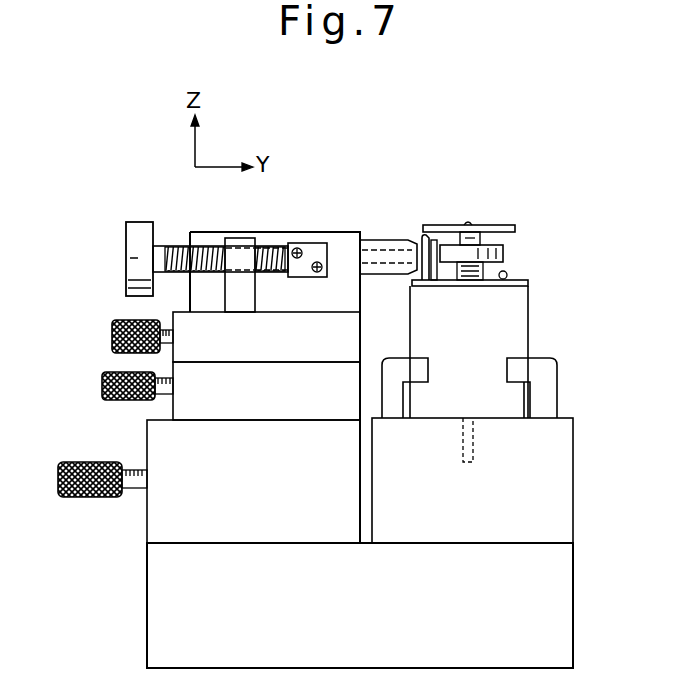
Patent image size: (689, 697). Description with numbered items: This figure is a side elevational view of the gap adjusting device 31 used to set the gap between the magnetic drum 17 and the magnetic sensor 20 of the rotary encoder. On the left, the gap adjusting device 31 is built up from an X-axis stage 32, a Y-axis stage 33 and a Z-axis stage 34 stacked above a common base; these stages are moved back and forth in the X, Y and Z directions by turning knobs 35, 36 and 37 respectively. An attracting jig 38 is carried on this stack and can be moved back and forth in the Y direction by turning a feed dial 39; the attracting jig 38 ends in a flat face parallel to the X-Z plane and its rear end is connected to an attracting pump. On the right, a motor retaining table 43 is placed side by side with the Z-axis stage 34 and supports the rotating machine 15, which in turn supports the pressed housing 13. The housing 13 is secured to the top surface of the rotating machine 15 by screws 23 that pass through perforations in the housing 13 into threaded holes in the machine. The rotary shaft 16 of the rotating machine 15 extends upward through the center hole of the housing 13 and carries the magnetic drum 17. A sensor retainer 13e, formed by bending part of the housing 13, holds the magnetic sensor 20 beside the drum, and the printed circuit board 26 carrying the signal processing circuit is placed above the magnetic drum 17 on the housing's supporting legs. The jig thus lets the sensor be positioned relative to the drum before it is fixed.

The housing 13 is at (529, 283).
The sensor retainer 13e is at (423, 256).
The rotating machine 15 is at (513, 343).
The rotary shaft 16 is at (471, 240).
The magnetic drum 17 is at (504, 253).
The magnetic sensor 20 is at (434, 246).
The screws 23 is at (507, 275).
The printed circuit board 26 is at (515, 228).
The gap adjusting device 31 is at (576, 446).
The X-axis stage 32 is at (180, 405).
The Y-axis stage 33 is at (173, 320).
The Z-axis stage 34 is at (147, 520).
The knob 35 is at (102, 387).
The knob 36 is at (112, 338).
The knob 37 is at (86, 497).
The attracting jig 38 is at (350, 231).
The feed dial 39 is at (139, 222).
The motor retaining table 43 is at (552, 517).